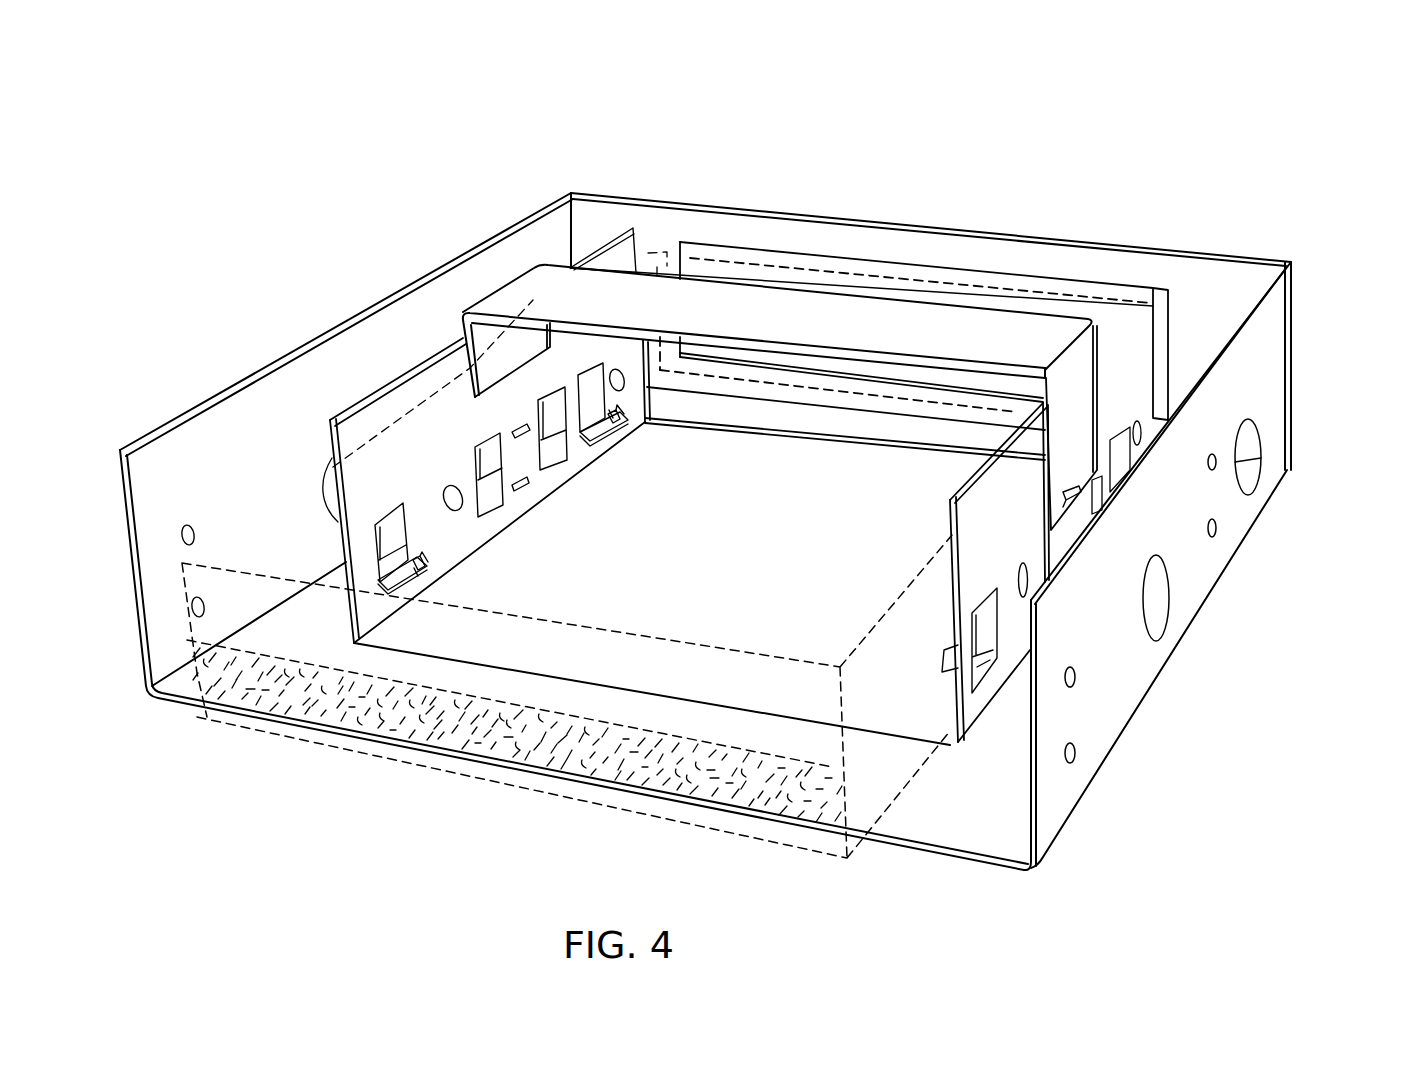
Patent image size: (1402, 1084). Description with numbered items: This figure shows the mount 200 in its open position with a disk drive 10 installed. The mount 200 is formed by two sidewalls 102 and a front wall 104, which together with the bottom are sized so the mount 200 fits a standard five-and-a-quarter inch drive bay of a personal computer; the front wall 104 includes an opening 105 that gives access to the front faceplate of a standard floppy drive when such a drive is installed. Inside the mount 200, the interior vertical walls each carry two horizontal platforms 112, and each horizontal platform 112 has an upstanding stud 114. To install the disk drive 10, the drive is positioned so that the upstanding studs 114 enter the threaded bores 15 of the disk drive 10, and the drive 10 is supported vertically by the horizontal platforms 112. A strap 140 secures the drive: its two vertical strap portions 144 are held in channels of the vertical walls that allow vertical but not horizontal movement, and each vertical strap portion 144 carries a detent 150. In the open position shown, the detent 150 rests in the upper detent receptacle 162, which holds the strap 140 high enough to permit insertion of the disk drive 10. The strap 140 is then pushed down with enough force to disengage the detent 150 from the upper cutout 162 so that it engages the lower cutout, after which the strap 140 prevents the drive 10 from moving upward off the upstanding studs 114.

The disk drive 10 is at (860, 775).
The threaded bores 15 is at (612, 414).
The sidewalls 102 is at (327, 377).
The front wall 104 is at (603, 213).
The opening 105 is at (917, 273).
The horizontal platforms 112 is at (605, 432).
The upstanding stud 114 is at (628, 412).
The strap 140 is at (777, 331).
The vertical strap portions 144 is at (508, 343).
The detent 150 is at (553, 472).
The upper detent receptacle 162 is at (527, 483).
The mount 200 is at (1277, 321).